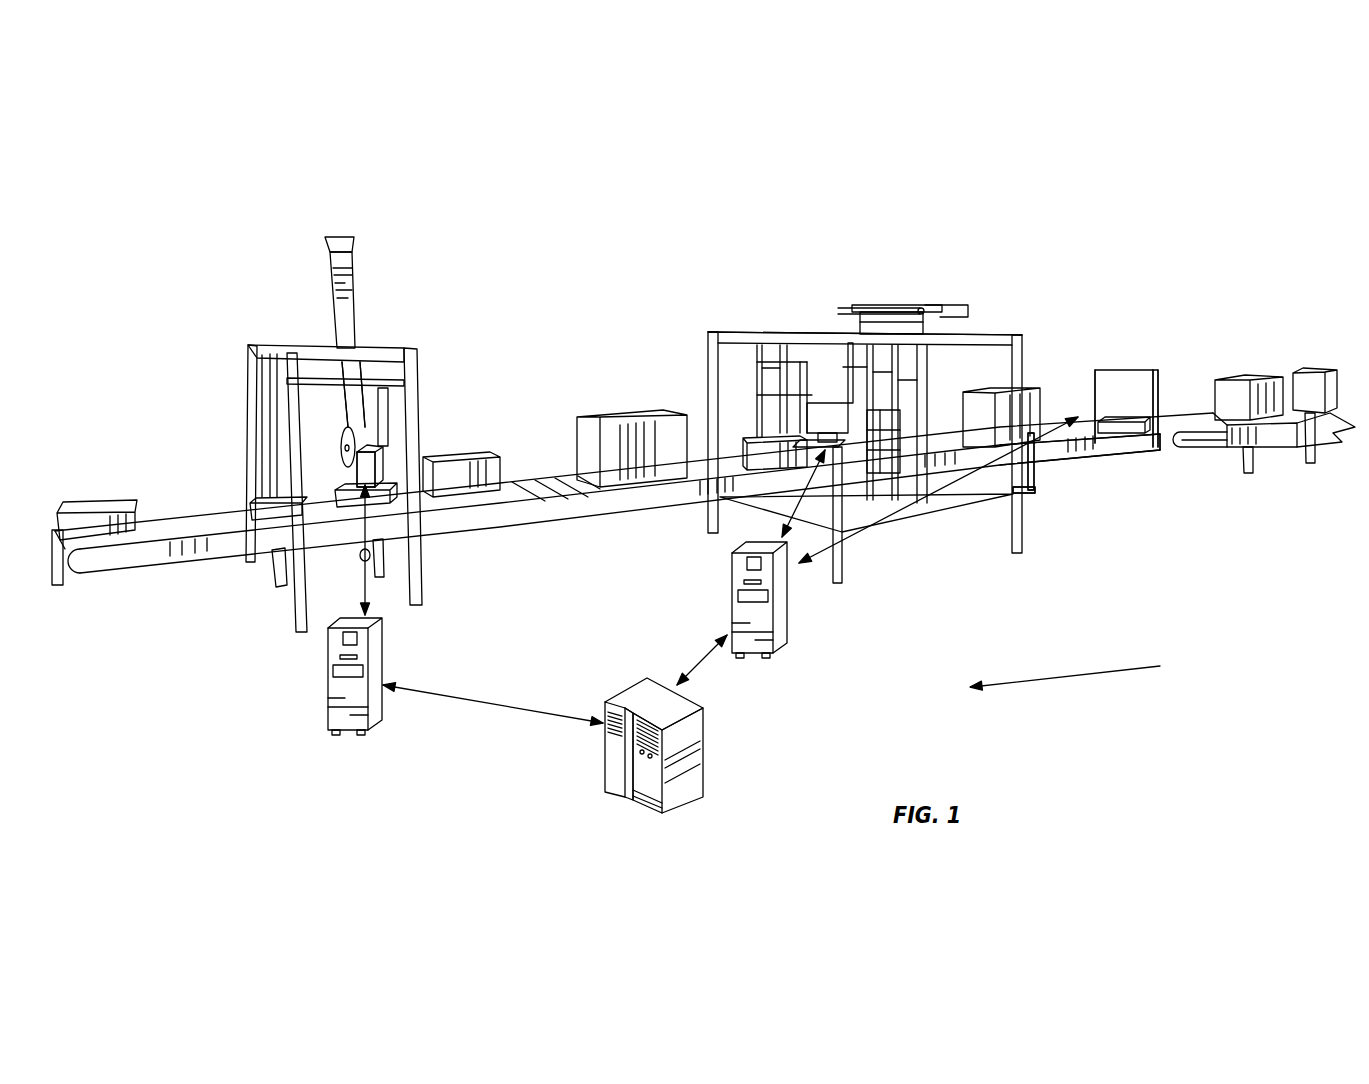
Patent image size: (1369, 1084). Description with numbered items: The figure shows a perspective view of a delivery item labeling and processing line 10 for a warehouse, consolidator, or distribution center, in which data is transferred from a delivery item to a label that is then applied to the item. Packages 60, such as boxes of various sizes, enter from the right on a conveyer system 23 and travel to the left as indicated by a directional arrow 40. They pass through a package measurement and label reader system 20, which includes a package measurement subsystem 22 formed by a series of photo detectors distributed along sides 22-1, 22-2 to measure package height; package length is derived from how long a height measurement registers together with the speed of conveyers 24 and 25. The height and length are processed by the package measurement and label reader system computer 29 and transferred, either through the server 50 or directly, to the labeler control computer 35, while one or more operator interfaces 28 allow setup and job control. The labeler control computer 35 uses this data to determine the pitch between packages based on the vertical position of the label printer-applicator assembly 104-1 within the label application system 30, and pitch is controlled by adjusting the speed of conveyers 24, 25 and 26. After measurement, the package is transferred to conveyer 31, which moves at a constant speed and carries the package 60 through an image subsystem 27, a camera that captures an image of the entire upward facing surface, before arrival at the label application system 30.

The delivery item labeling and processing line 10 is at (628, 270).
The package measurement and label reader system 20 is at (1062, 268).
The package measurement subsystem 22 is at (1120, 380).
The side of package measurement subsystem 22-1 is at (1090, 393).
The side of package measurement subsystem 22-2 is at (1160, 400).
The conveyer system 23 is at (1265, 445).
The conveyer 24 is at (1182, 445).
The conveyer 25 is at (1115, 445).
The conveyer 26 is at (1050, 462).
The image subsystem 27 is at (882, 305).
The operator interface 28 is at (826, 410).
The package measurement and label reader system computer 29 is at (788, 630).
The label application system 30 is at (408, 290).
The conveyer 31 is at (548, 510).
The labeler control computer 35 is at (383, 637).
The directional arrow 40 is at (1140, 667).
The server 50 is at (705, 747).
The package 60 is at (503, 467).
The label printer-applicator assembly 104-1 is at (405, 432).